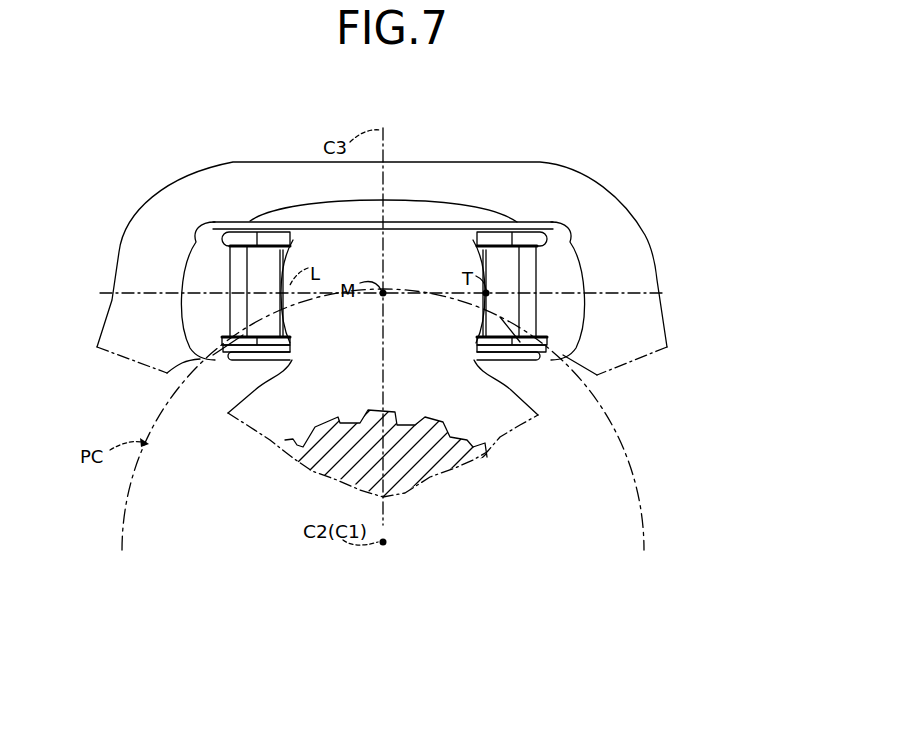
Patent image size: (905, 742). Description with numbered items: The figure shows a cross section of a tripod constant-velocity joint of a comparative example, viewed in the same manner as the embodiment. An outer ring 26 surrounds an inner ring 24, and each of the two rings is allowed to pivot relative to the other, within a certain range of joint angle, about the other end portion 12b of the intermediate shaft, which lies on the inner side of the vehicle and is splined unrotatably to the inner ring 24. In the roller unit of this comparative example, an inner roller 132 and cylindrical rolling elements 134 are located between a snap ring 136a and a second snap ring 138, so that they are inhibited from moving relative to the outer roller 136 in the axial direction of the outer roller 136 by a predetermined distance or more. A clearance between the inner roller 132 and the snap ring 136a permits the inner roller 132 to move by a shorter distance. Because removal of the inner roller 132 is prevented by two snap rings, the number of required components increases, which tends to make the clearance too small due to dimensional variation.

The outer ring 26 is at (204, 134).
The inner ring 24 is at (228, 440).
The other end portion of the intermediate shaft 12b is at (452, 470).
The snap ring 136a is at (527, 237).
The outer roller 136 is at (523, 310).
The cylindrical rolling elements 134 is at (540, 315).
The inner roller 132 is at (510, 343).
The snap ring 138 is at (563, 352).